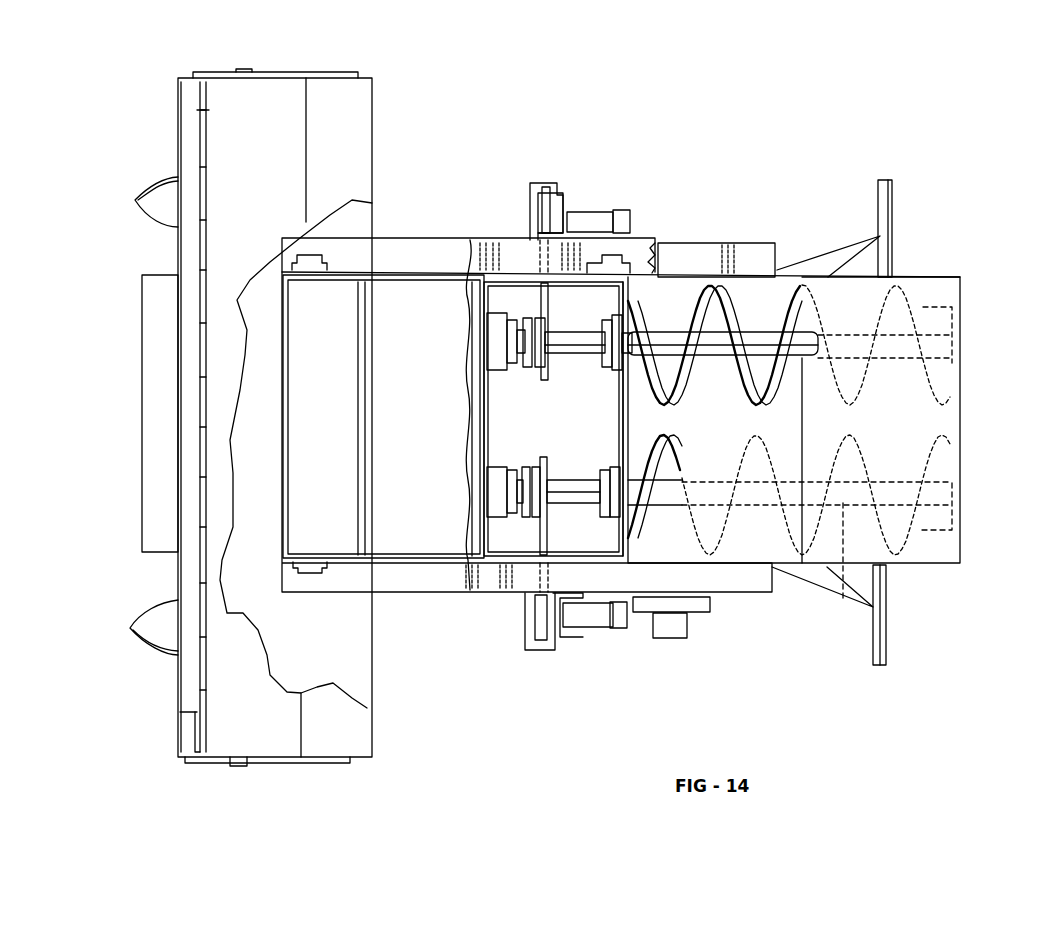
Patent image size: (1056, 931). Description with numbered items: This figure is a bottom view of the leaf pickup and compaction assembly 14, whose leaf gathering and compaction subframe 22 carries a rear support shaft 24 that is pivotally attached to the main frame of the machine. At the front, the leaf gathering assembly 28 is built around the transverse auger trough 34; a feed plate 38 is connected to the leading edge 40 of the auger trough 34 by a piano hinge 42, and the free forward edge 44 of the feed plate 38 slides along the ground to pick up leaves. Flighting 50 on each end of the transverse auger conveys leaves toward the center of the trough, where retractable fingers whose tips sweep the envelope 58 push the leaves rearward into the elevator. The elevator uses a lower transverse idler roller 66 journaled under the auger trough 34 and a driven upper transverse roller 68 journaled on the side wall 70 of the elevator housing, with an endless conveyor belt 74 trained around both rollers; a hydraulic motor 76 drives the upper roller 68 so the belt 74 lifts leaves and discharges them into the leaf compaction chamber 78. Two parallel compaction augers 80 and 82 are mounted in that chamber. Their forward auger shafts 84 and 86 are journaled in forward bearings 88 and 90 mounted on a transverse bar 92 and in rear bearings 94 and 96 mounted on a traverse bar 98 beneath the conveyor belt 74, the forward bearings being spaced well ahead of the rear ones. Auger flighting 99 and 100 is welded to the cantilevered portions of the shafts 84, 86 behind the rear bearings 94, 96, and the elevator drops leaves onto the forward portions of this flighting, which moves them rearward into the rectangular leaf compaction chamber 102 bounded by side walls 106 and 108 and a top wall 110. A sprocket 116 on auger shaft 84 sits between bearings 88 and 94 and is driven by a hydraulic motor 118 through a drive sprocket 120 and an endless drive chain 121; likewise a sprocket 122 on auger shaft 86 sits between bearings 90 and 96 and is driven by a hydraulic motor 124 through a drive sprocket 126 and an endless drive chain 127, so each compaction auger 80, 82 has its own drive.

The leaf pickup and compaction assembly 14 is at (757, 335).
The leaf gathering and compaction subframe 22 is at (472, 257).
The rear support shaft 24 is at (892, 188).
The leaf gathering assembly 28 is at (395, 120).
The transverse auger trough 34 is at (262, 95).
The feed plate 38 is at (186, 133).
The leading edge 40 is at (203, 110).
The piano hinge 42 is at (182, 712).
The free forward edge 44 is at (177, 573).
The flighting 50 is at (147, 207).
The envelope 58 is at (150, 472).
The lower transverse idler roller 66 is at (335, 565).
The driven upper transverse roller 68 is at (630, 263).
The side wall 70 is at (433, 267).
The endless conveyor belt 74 is at (405, 300).
The hydraulic motor 76 is at (687, 627).
The leaf compaction chamber 78 is at (780, 262).
The compaction auger 80 is at (741, 275).
The compaction auger 82 is at (843, 605).
The auger shaft 84 is at (570, 347).
The auger shaft 86 is at (508, 545).
The forward bearing 88 is at (500, 322).
The forward bearing 90 is at (487, 483).
The transverse bar 92 is at (475, 535).
The rear bearing 94 is at (607, 370).
The rear bearing 96 is at (603, 483).
The traverse bar 98 is at (633, 282).
The auger flighting 99 is at (963, 317).
The auger flighting 100 is at (963, 537).
The rectangular leaf compaction chamber 102 is at (875, 240).
The side wall 106 is at (930, 567).
The side wall 108 is at (930, 275).
The top wall 110 is at (958, 420).
The sprocket 116 is at (537, 377).
The hydraulic motor 118 is at (603, 215).
The drive sprocket 120 is at (533, 213).
The endless drive chain 121 is at (567, 207).
The sprocket 122 is at (533, 463).
The hydraulic motor 124 is at (627, 622).
The drive sprocket 126 is at (553, 627).
The endless drive chain 127 is at (555, 595).